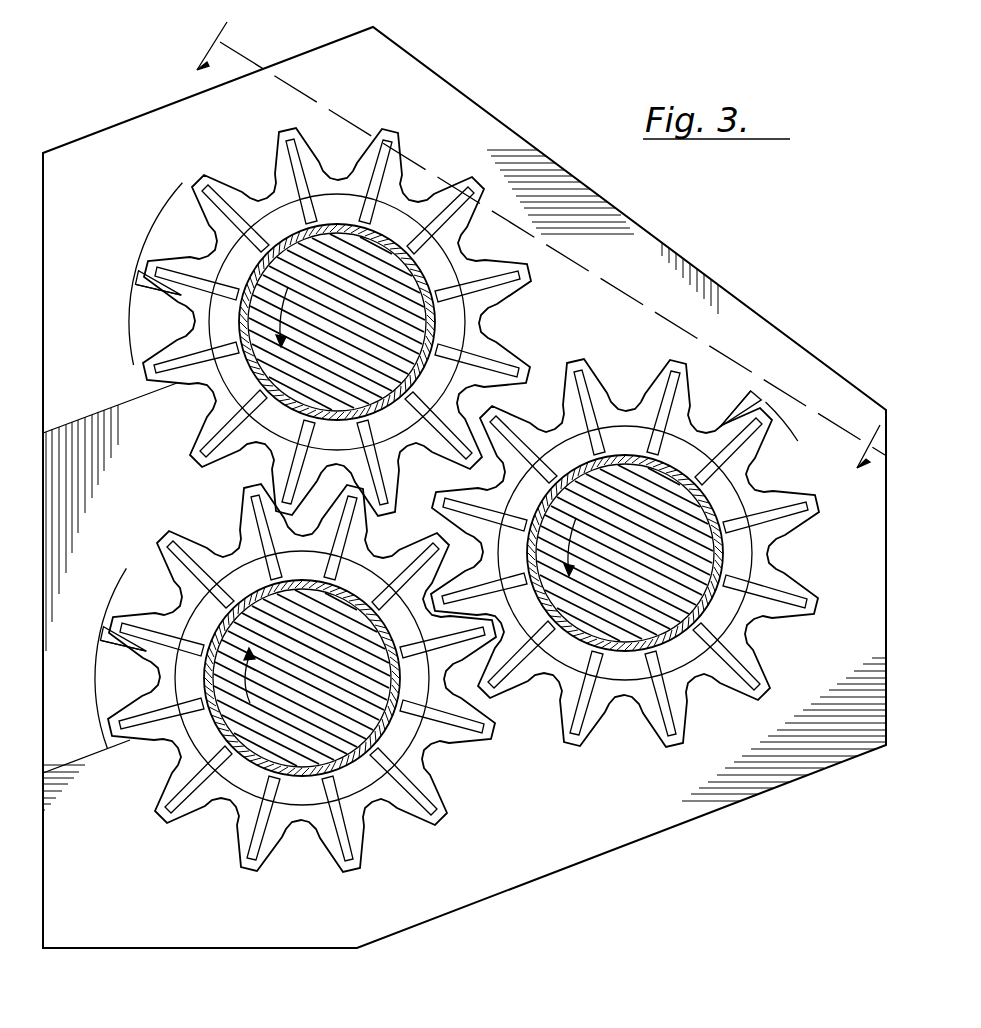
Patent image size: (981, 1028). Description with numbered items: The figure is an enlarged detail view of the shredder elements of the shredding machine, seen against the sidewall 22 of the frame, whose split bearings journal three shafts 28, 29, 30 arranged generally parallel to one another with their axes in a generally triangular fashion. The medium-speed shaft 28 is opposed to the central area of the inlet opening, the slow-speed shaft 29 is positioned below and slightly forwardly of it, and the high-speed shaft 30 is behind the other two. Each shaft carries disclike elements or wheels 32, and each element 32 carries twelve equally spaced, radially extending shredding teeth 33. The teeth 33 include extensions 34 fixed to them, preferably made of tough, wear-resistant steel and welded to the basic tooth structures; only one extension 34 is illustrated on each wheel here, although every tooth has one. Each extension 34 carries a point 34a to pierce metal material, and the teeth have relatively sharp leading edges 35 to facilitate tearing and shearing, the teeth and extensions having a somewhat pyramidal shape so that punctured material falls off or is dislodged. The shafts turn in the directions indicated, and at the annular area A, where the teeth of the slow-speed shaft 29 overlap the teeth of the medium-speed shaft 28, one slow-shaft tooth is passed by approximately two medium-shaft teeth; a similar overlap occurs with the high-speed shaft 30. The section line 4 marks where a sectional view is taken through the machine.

The sidewall 22 is at (143, 114).
The section line 4- 4 is at (545, 236).
The medium-speed shaft 28 is at (396, 298).
The slow-speed shaft 29 is at (355, 770).
The high-speed shaft 30 is at (680, 572).
The disclike element 32 is at (455, 327).
The shredding tooth 33 is at (283, 130).
The tooth extension 34 is at (139, 272).
The point 34a is at (135, 285).
The leading edge 35 is at (730, 418).
The annular area of overlap A is at (272, 477).